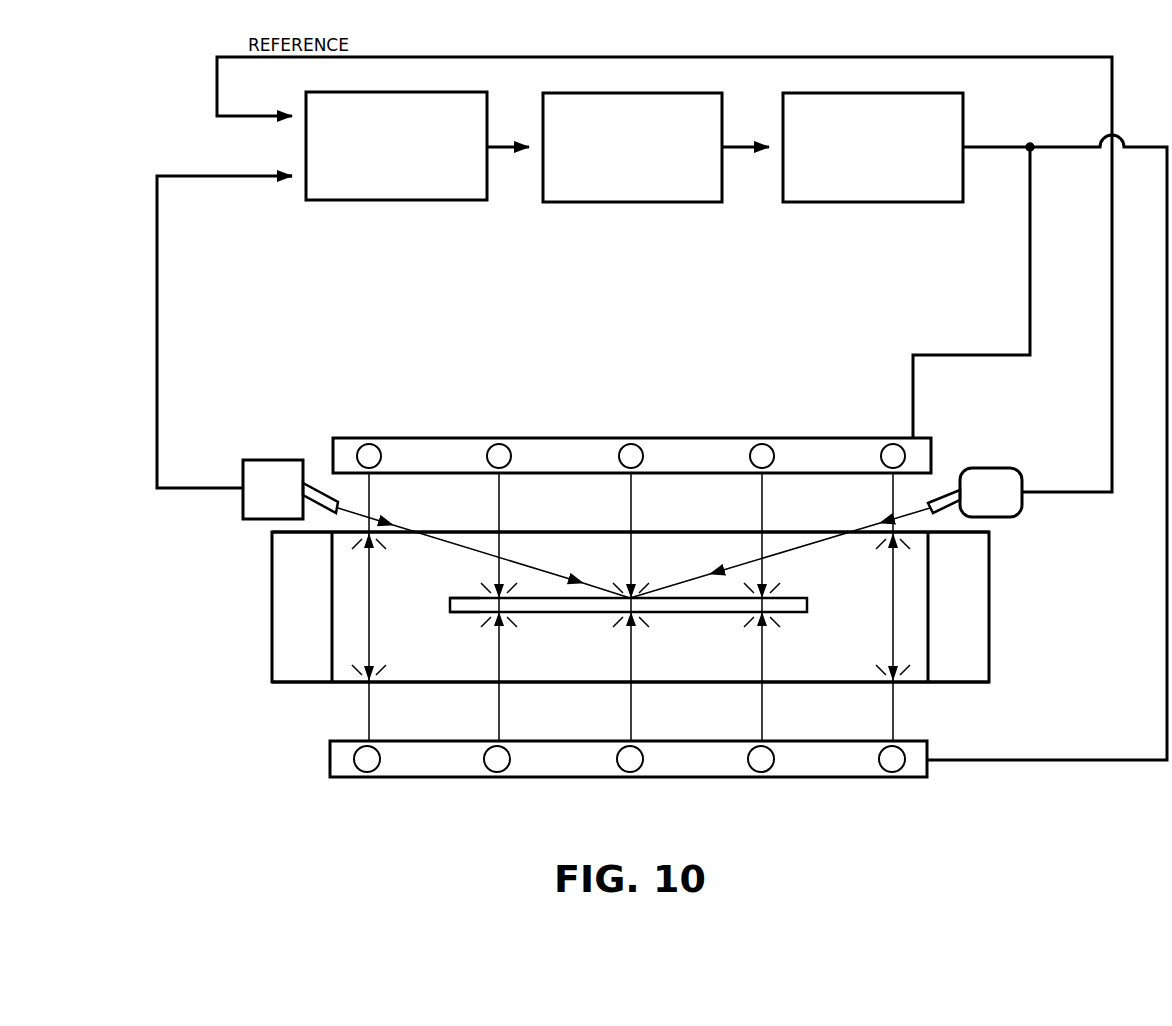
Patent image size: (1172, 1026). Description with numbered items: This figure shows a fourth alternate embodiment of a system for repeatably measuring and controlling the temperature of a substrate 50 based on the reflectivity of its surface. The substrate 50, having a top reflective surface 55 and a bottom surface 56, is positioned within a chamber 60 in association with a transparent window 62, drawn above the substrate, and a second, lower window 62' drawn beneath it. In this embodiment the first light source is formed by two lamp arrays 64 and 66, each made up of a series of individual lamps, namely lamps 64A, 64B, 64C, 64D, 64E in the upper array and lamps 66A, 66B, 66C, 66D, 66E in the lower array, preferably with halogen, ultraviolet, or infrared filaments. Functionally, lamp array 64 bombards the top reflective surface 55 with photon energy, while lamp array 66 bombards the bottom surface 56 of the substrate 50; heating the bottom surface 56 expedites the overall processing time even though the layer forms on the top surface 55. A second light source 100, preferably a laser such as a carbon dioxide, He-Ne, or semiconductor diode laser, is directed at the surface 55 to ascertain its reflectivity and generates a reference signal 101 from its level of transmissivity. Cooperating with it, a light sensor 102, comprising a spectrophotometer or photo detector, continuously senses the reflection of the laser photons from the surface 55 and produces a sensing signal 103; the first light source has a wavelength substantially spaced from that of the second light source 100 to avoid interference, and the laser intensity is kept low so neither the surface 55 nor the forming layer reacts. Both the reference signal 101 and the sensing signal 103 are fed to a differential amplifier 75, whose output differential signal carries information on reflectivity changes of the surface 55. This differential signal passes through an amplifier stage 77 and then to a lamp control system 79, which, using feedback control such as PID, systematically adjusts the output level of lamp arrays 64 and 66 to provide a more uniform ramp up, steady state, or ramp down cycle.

The substrate 50 is at (778, 605).
The top reflective surface 55 is at (460, 590).
The bottom surface 56 is at (460, 621).
The chamber 60 is at (345, 682).
The transparent window 62 is at (630, 510).
The lower window 62' is at (630, 703).
The lamp array 64 is at (333, 450).
The individual lamp 64A is at (372, 452).
The individual lamp 64B is at (502, 452).
The individual lamp 64C is at (634, 452).
The individual lamp 64D is at (765, 452).
The individual lamp 64E is at (895, 452).
The lamp array 66 is at (330, 757).
The individual lamp 66A is at (371, 764).
The individual lamp 66B is at (501, 764).
The individual lamp 66C is at (634, 764).
The individual lamp 66D is at (765, 764).
The individual lamp 66E is at (893, 764).
The differential amplifier 75 is at (363, 201).
The amplifier stage 77 is at (603, 203).
The lamp control system 79 is at (901, 203).
The second light source 100 is at (990, 498).
The reference signal 101 is at (1112, 385).
The light sensor 102 is at (275, 495).
The sensing signal 103 is at (156, 310).